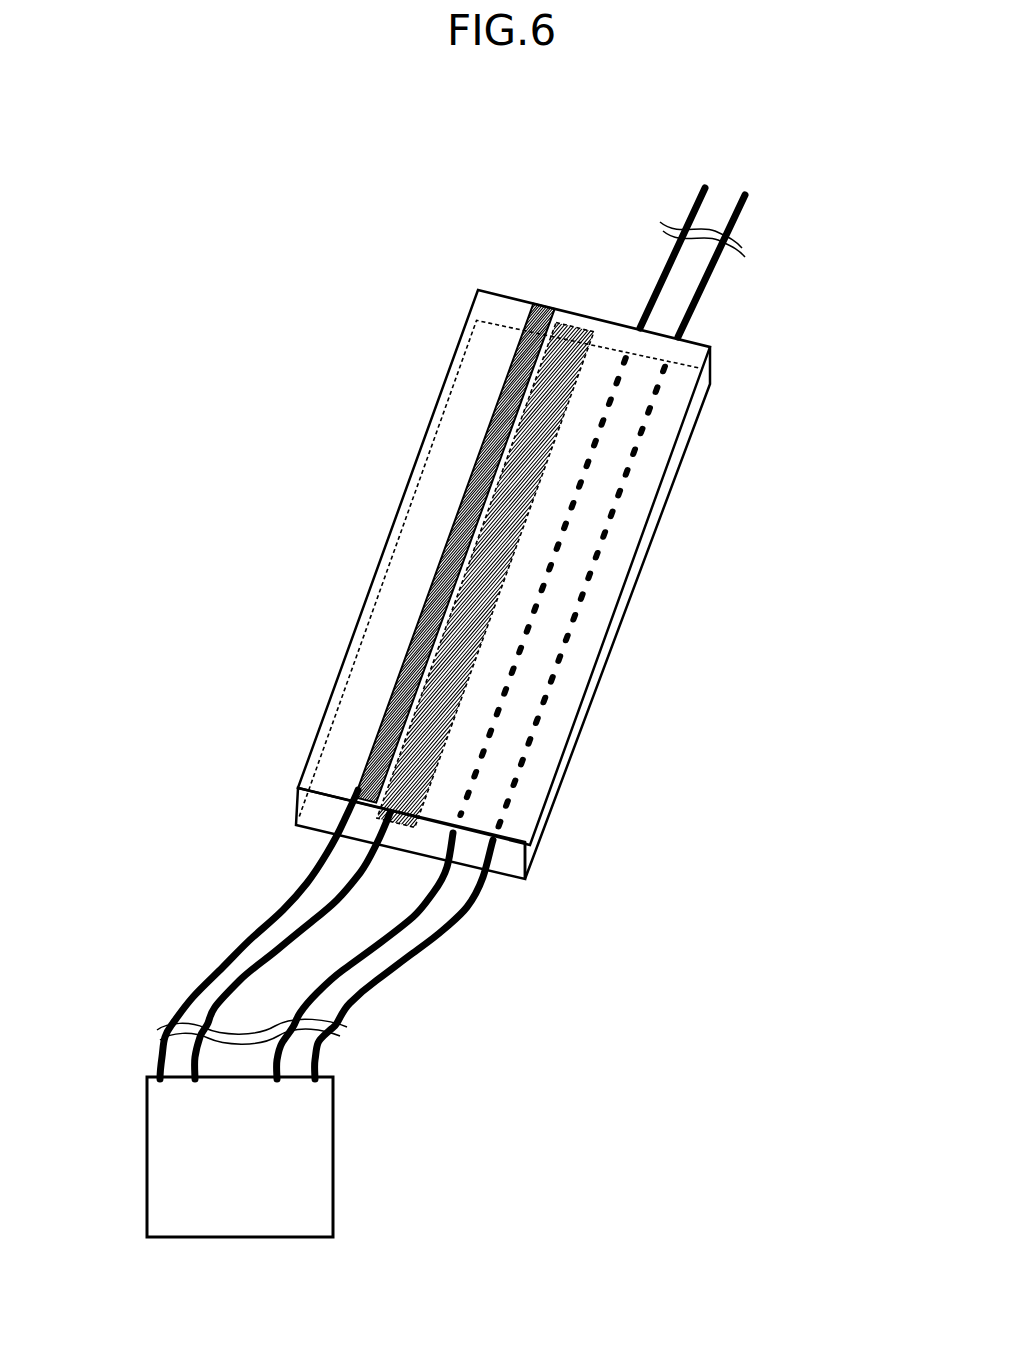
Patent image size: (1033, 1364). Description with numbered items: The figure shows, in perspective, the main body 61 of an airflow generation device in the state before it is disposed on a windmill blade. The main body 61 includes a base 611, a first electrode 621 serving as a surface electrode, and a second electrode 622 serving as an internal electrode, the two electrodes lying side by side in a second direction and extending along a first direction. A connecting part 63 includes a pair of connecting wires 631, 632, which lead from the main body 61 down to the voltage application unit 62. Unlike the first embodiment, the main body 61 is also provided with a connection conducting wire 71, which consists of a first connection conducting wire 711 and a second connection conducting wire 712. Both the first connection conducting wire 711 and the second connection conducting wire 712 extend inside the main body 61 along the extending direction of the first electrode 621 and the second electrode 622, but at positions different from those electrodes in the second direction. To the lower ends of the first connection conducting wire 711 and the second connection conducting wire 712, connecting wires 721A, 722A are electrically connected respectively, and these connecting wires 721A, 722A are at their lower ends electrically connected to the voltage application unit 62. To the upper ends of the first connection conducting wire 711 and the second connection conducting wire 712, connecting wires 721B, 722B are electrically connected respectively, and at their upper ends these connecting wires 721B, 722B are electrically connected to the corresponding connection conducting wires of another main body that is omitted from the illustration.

The main body 61 is at (373, 468).
The base 611 is at (468, 338).
The first electrode 621 is at (513, 385).
The second electrode 622 is at (533, 417).
The voltage application unit 62 is at (155, 1158).
The connecting part 63 is at (188, 875).
The connecting wire 631 is at (258, 925).
The connecting wire 632 is at (350, 888).
The connection conducting wire 71 is at (720, 543).
The first connection conducting wire 711 is at (557, 558).
The second connection conducting wire 712 is at (590, 590).
The connecting wire 721A is at (337, 982).
The connecting wire 721B is at (658, 275).
The connecting wire 722A is at (430, 950).
The connecting wire 722B is at (700, 293).